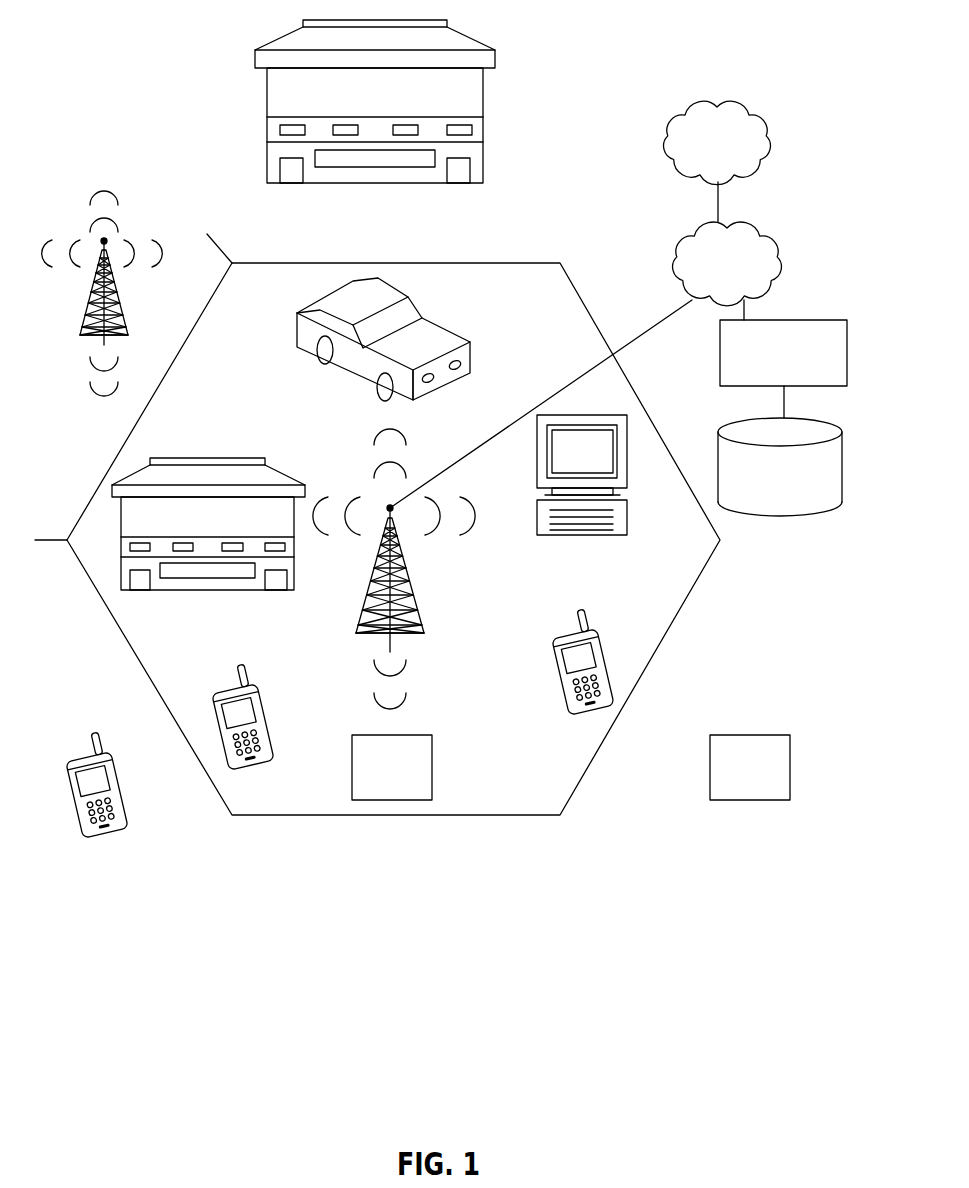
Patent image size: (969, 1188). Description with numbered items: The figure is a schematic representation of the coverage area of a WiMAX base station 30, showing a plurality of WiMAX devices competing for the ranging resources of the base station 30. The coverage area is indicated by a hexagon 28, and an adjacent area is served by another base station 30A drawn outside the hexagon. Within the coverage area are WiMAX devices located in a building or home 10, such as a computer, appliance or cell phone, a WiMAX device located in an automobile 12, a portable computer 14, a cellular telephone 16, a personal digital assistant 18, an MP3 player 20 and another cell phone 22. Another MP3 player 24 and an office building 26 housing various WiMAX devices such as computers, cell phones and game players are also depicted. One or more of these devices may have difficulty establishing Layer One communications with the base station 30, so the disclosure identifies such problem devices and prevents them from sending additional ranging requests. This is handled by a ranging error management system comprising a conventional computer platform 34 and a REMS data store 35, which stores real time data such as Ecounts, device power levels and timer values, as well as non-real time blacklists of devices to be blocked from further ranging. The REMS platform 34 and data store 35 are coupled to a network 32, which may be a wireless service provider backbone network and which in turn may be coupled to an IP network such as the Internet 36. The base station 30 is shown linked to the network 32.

The building or home 10 is at (208, 457).
The automobile 12 is at (470, 363).
The portable computer 14 is at (627, 523).
The cellular telephone 16 is at (558, 700).
The personal digital assistant 18 is at (268, 740).
The MP3 player 20 is at (432, 770).
The cell phone 22 is at (120, 815).
The MP3 player 24 is at (710, 785).
The office building 26 is at (485, 152).
The hexagon 28 is at (455, 818).
The WiMAX base station 30 is at (410, 613).
The base station 30A is at (115, 318).
The network 32 is at (670, 257).
The REMS computer platform 34 is at (720, 365).
The REMS data store 35 is at (718, 463).
The Internet 36 is at (672, 165).